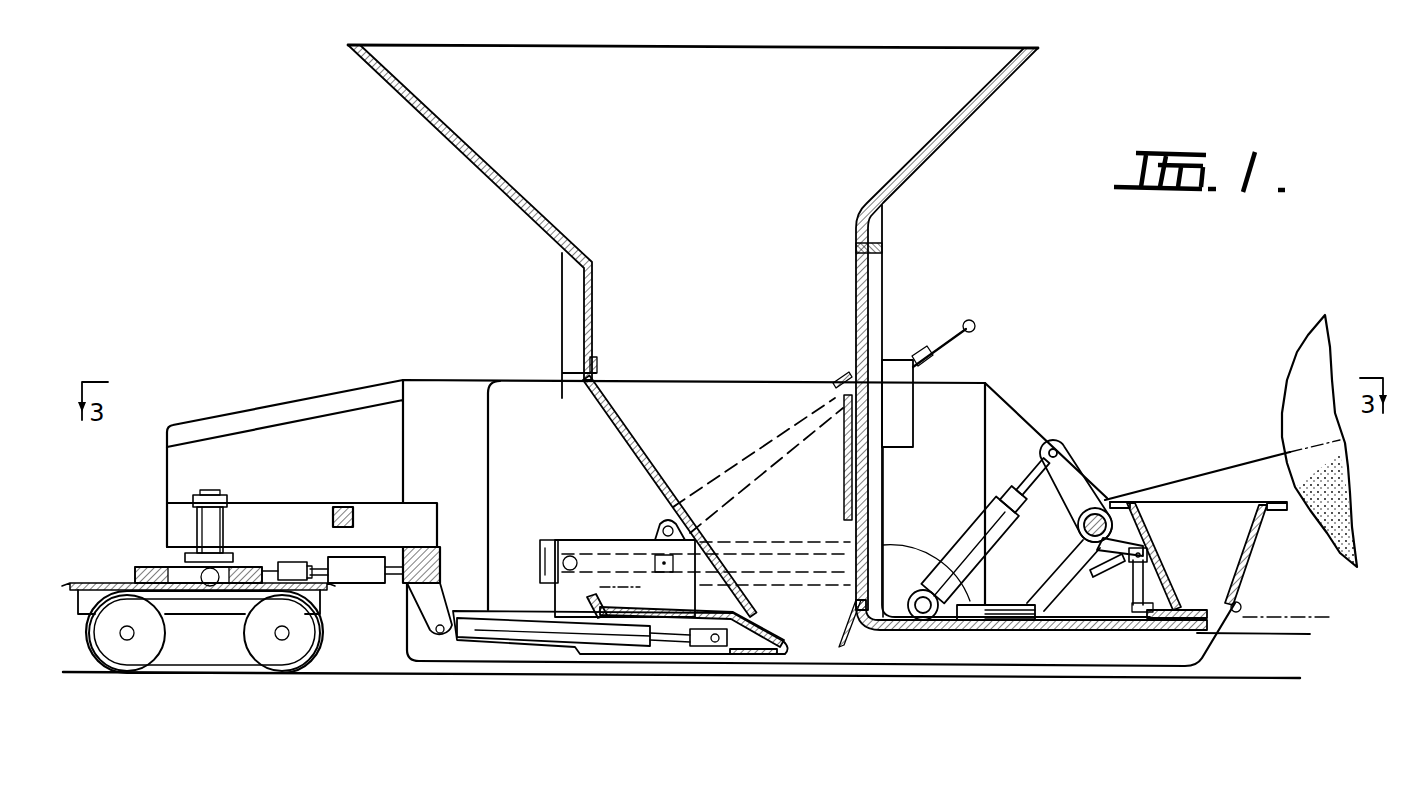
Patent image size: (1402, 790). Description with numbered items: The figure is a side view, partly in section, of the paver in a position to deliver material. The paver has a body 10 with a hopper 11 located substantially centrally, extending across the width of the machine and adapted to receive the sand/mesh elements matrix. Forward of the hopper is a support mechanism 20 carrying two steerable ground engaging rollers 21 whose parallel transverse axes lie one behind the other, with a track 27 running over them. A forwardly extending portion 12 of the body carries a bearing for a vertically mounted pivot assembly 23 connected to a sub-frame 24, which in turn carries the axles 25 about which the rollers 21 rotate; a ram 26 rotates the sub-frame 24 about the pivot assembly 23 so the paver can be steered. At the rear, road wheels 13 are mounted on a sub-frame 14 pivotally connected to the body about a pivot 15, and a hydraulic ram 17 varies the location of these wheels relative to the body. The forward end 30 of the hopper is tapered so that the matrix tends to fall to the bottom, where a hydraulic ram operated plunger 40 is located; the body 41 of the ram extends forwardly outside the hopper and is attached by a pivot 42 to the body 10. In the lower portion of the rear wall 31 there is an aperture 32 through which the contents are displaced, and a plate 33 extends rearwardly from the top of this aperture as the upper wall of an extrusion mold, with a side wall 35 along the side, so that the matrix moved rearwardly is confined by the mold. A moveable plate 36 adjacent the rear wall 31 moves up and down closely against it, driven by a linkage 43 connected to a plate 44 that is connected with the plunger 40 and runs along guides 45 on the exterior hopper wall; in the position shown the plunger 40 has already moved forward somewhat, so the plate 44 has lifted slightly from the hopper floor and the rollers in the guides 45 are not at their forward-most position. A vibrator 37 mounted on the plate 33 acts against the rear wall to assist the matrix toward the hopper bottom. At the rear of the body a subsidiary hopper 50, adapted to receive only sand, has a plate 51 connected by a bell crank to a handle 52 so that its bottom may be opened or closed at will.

The body 10 is at (991, 258).
The hopper 11 is at (690, 269).
The forwardly extending portion 12 is at (305, 408).
The road wheels 13 is at (1310, 365).
The sub-frame 14 is at (1248, 480).
The pivot 15 is at (1100, 510).
The hydraulic ram 17 is at (978, 537).
The support mechanism 20 is at (153, 545).
The ground engaging rollers 21 is at (107, 647).
The pivot assembly 23 is at (215, 528).
The sub-frame 24 is at (135, 568).
The axles 25 is at (128, 641).
The ram 26 is at (362, 572).
The crawler track 27 is at (199, 675).
The forward end of the hopper 30 is at (607, 425).
The rear wall of the hopper 31 is at (868, 277).
The aperture 32 is at (812, 617).
The plate 33 is at (1062, 633).
The side wall 35 is at (997, 655).
The moveable plate 36 is at (853, 537).
The vibrator 37 is at (1010, 610).
The plunger 40 is at (752, 650).
The body of the ram 41 is at (592, 633).
The pivot 42 is at (450, 640).
The linkage 43 is at (775, 438).
The plate 44 is at (625, 597).
The guides 45 is at (543, 533).
The subsidiary hopper 50 is at (1198, 556).
The plate 51 is at (1200, 612).
The handle 52 is at (1105, 578).